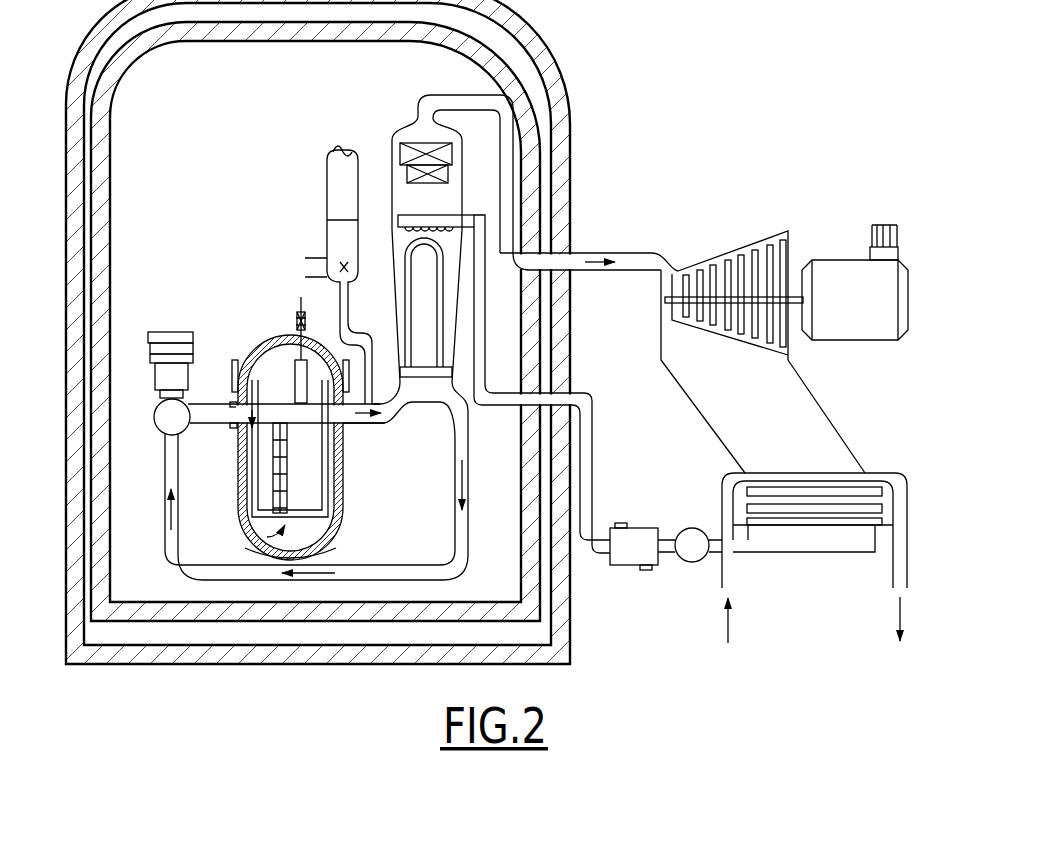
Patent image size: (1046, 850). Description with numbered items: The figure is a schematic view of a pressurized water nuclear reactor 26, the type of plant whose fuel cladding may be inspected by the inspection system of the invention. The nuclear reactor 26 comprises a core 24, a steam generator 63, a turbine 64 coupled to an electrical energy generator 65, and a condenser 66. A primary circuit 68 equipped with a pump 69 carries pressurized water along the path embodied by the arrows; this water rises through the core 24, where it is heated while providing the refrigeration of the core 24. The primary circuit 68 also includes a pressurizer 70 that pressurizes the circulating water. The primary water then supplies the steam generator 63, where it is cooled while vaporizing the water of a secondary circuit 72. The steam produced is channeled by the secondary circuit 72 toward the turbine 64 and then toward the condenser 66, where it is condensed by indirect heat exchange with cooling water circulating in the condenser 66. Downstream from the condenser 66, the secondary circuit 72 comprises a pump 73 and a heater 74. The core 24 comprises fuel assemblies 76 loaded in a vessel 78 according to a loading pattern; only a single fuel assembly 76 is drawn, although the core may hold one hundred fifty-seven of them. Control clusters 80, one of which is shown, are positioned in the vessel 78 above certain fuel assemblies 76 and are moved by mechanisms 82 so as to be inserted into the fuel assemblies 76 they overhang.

The core 24 is at (338, 447).
The nuclear reactor 26 is at (580, 107).
The steam generator 63 is at (399, 114).
The turbine 64 is at (756, 235).
The electrical energy generator 65 is at (910, 283).
The condenser 66 is at (848, 423).
The primary circuit 68 is at (158, 525).
The pump 69 is at (160, 325).
The pressurizer 70 is at (322, 194).
The secondary circuit 72 is at (622, 250).
The pump 73 is at (691, 564).
The heater 74 is at (639, 525).
The fuel assembly 76 is at (272, 477).
The vessel 78 is at (343, 518).
The control cluster 80 is at (315, 358).
The mechanism 82 is at (294, 323).